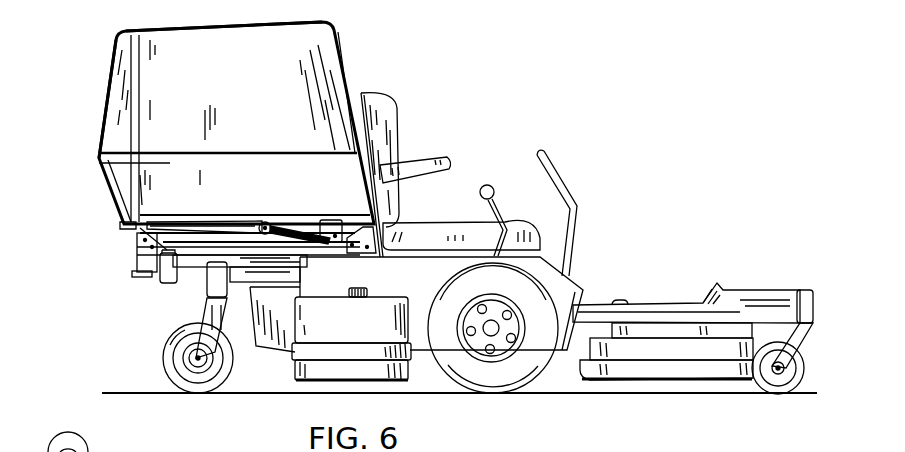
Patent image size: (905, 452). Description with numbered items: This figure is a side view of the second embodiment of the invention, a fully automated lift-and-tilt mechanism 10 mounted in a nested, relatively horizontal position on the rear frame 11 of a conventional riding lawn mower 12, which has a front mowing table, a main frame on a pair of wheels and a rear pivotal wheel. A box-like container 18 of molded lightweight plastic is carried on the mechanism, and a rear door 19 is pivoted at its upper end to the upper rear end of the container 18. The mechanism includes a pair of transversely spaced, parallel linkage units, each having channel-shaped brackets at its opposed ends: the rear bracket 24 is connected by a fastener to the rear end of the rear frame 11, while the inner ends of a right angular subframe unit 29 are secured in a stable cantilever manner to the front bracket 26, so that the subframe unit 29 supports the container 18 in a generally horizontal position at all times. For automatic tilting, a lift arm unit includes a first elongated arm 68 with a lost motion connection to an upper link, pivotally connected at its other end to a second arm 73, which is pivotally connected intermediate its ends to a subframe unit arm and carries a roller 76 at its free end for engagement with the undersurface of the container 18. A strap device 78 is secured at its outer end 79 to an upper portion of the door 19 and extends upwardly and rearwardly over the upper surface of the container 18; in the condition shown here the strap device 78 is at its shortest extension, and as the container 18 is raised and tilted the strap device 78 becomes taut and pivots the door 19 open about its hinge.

The fully automated lift-and-tilt mechanism 10 is at (120, 254).
The rear frame 11 is at (202, 264).
The riding lawn mower 12 is at (603, 185).
The container 18 is at (321, 76).
The rear door 19 is at (119, 114).
The rear bracket 24 is at (153, 248).
The front bracket 26 is at (385, 224).
The subframe unit 29 is at (281, 205).
The first elongated arm 68 is at (283, 226).
The second arm 73 is at (238, 219).
The roller 76 is at (263, 222).
The strap device 78 is at (175, 31).
The outer end of strap device 79 is at (111, 70).